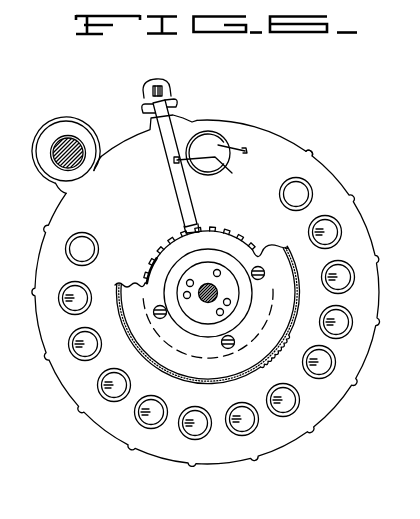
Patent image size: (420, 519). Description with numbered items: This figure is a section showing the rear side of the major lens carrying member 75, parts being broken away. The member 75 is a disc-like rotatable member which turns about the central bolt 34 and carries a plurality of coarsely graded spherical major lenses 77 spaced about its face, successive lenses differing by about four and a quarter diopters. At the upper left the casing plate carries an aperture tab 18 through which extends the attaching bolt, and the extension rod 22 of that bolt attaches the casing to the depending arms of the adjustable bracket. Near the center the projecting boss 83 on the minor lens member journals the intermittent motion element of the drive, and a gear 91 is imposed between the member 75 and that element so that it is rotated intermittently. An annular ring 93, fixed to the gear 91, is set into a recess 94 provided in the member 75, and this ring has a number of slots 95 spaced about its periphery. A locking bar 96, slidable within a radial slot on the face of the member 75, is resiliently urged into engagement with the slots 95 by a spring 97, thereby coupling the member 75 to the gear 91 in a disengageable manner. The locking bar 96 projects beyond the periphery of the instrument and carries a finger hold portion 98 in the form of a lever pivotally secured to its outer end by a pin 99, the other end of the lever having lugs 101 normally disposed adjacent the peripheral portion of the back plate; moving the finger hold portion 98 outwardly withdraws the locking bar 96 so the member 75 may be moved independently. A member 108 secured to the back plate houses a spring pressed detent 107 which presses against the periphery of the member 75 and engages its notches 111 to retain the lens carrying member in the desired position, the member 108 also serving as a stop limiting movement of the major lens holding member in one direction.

The major lens carrying member 75 is at (293, 148).
The notches 111 is at (318, 154).
The major lenses 77 is at (197, 435).
The detent member 108 is at (70, 127).
The extension rod 22 is at (62, 160).
The aperture tab 18 is at (60, 194).
The spring pressed detent 107 is at (96, 169).
The locking bar 96 is at (185, 203).
The slots 95 is at (185, 237).
The finger hold portion 98 is at (168, 82).
The pin 99 is at (167, 93).
The lugs 101 is at (148, 108).
The spring 97 is at (226, 170).
The projecting boss 83 is at (195, 311).
The gear 91 is at (264, 367).
The annular ring 93 is at (158, 268).
The recess 94 is at (158, 250).
The bolt 34 is at (212, 289).